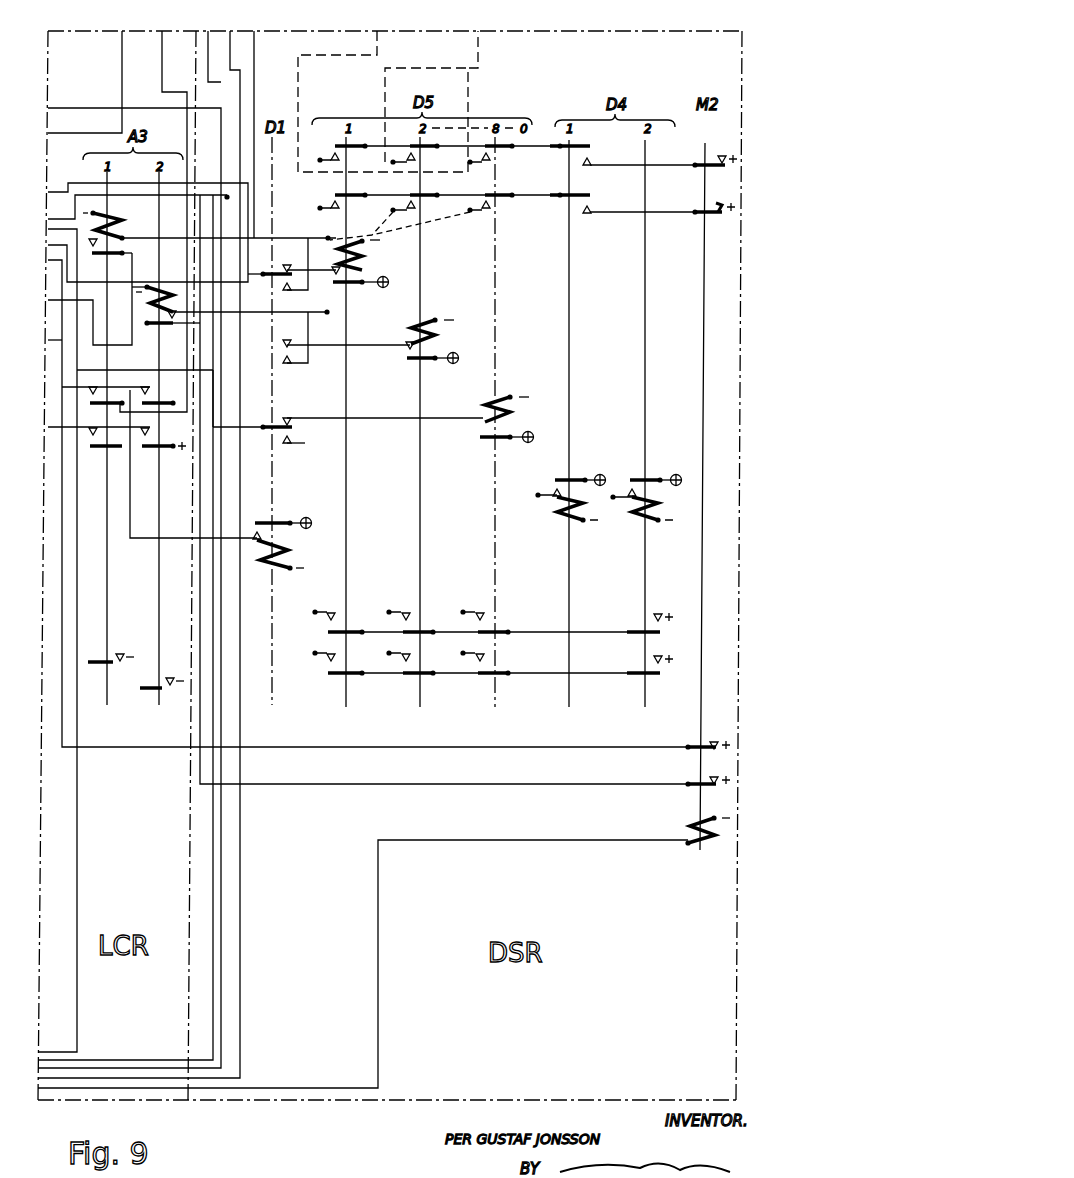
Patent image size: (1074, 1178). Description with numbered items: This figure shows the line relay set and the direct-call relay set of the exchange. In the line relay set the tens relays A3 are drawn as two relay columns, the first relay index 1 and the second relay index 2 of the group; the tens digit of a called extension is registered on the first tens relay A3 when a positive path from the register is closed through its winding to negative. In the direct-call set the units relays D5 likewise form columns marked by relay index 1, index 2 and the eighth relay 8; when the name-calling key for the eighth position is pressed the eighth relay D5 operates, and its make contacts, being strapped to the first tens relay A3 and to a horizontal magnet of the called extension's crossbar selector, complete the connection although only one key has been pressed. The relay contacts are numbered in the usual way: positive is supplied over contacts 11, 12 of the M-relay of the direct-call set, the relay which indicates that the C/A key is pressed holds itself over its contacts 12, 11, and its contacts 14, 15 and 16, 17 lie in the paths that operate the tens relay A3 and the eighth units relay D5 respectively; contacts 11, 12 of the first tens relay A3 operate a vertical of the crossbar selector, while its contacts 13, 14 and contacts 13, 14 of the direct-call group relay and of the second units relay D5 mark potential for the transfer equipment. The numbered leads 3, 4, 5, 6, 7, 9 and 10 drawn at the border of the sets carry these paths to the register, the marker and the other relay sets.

The first relay of relay group 1 is at (129, 550).
The second relay of relay group 2 is at (85, 83).
The wire 3 is at (148, 221).
The wire 4 is at (368, 407).
The wire 5 is at (139, 555).
The wire 6 is at (149, 546).
The wire 7 is at (368, 389).
The eighth relay of group D5 8 is at (363, 560).
The wire 9 is at (90, 299).
The wire 10 is at (54, 334).
The relay contact 11 is at (387, 561).
The relay contact 12 is at (410, 617).
The relay contact 13 is at (412, 409).
The relay contact 14 is at (391, 393).
The relay contact 15 is at (295, 300).
The relay contact 16 is at (252, 421).
The relay contact 17 is at (383, 423).
The tens relay A3 is at (209, 267).
The direct selection units relay D5 is at (492, 456).